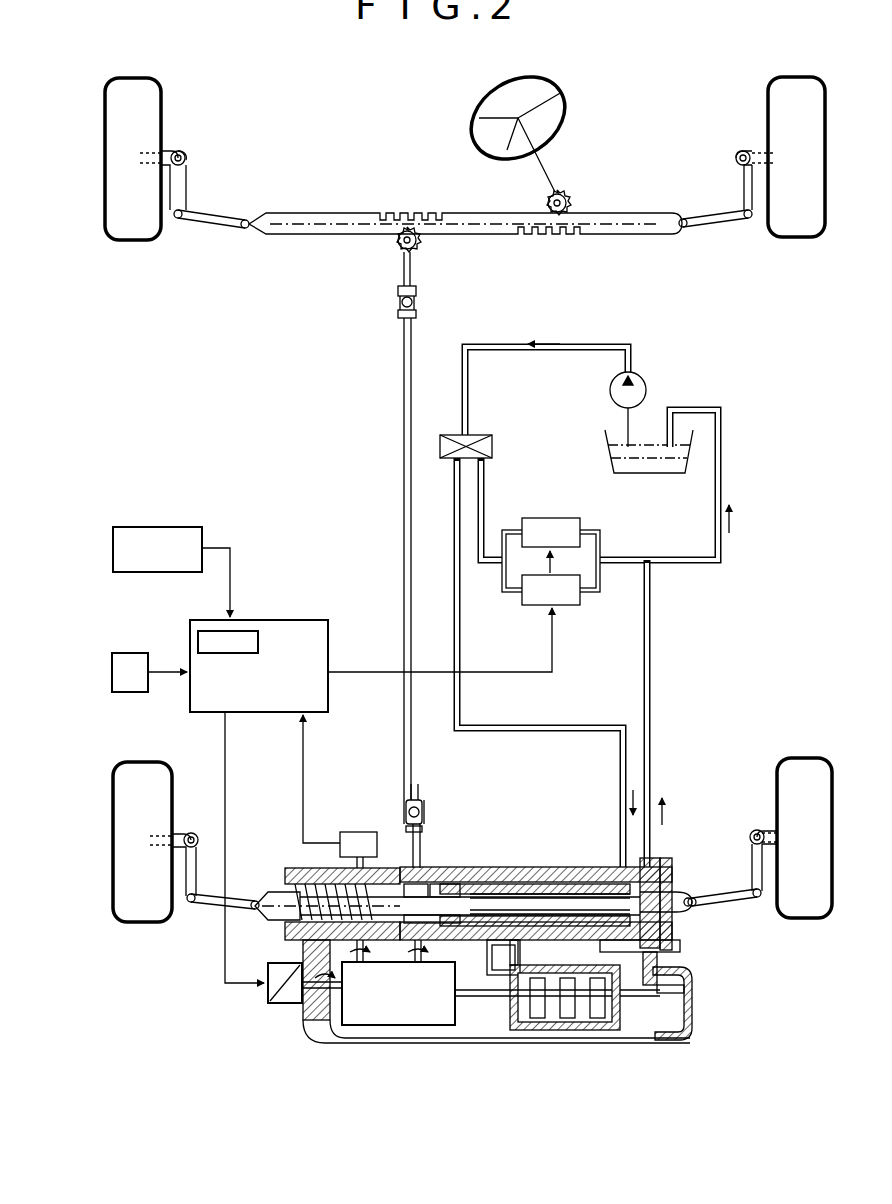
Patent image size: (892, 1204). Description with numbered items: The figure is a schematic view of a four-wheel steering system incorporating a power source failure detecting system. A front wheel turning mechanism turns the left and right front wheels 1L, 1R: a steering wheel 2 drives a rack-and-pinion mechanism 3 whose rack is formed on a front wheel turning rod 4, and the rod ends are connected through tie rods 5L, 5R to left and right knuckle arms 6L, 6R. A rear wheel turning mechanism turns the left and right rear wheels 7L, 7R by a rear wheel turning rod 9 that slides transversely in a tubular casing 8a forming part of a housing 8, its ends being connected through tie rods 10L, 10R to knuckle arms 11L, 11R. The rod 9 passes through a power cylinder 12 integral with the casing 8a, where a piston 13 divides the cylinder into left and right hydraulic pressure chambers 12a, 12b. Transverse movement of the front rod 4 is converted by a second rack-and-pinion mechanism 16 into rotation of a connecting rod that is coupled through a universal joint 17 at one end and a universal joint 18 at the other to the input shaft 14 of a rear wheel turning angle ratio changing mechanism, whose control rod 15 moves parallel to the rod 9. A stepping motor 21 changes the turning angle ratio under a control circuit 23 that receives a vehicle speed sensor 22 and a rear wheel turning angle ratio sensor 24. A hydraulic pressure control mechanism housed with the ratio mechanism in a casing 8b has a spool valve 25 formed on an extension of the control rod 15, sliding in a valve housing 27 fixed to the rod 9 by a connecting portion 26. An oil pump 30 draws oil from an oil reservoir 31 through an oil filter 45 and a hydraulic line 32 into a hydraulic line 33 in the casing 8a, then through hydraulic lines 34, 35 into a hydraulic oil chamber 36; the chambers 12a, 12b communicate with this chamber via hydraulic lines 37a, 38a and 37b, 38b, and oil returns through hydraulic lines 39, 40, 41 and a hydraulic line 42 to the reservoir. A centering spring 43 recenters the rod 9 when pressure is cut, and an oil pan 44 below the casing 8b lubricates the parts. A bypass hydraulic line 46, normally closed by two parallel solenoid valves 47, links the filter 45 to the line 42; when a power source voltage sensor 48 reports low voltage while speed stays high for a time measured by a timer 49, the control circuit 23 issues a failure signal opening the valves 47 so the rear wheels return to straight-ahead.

The left front wheel 1L is at (160, 110).
The right front wheel 1R is at (770, 106).
The steering wheel 2 is at (478, 124).
The rack-and-pinion mechanism 3 is at (577, 197).
The front wheel turning rod 4 is at (545, 235).
The left tie rod 5L is at (221, 233).
The right tie rod 5R is at (717, 232).
The left knuckle arm 6L is at (187, 181).
The right knuckle arm 6R is at (742, 170).
The left rear wheel 7L is at (173, 768).
The right rear wheel 7R is at (779, 770).
The housing 8 is at (546, 862).
The tubular casing 8a is at (560, 870).
The casing 8b is at (695, 1005).
The rear wheel turning rod 9 is at (276, 894).
The left tie rod 10L is at (220, 906).
The right tie rod 10R is at (745, 900).
The left knuckle arm 11L is at (198, 862).
The right knuckle arm 11R is at (752, 850).
The power cylinder 12 is at (445, 856).
The left hydraulic pressure chamber 12a is at (405, 868).
The right hydraulic pressure chamber 12b is at (468, 868).
The piston 13 is at (430, 868).
The input shaft 14 is at (292, 940).
The control rod 15 is at (455, 1022).
The second rack-and-pinion mechanism 16 is at (388, 249).
The universal joint 17 is at (419, 301).
The universal joint 18 is at (428, 802).
The stepping motor 21 is at (268, 996).
The vehicle speed sensor 22 is at (135, 652).
The control circuit 23 is at (295, 619).
The rear wheel turning angle ratio sensor 24 is at (348, 831).
The spool valve 25 is at (537, 1019).
The connecting portion 26 is at (662, 944).
The valve housing 27 is at (625, 1020).
The oil pump 30 is at (645, 378).
The oil reservoir 31 is at (656, 474).
The hydraulic line 32 is at (582, 727).
The hydraulic line 33 is at (650, 860).
The hydraulic line 34 is at (622, 866).
The hydraulic line 35 is at (503, 953).
The hydraulic oil chamber 36 is at (568, 1019).
The hydraulic line 37a is at (496, 883).
The hydraulic line 37b is at (512, 883).
The hydraulic line 38a is at (510, 1022).
The hydraulic line 38b is at (660, 962).
The hydraulic line 39 is at (690, 981).
The hydraulic line 40 is at (676, 893).
The hydraulic line 41 is at (661, 862).
The hydraulic line 42 is at (721, 466).
The centering spring 43 is at (306, 869).
The oil pan 44 is at (686, 1040).
The oil filter 45 is at (486, 434).
The bypass hydraulic line 46 is at (485, 496).
The solenoid valves 47 is at (570, 517).
The power source voltage sensor 48 is at (130, 526).
The timer 49 is at (196, 630).